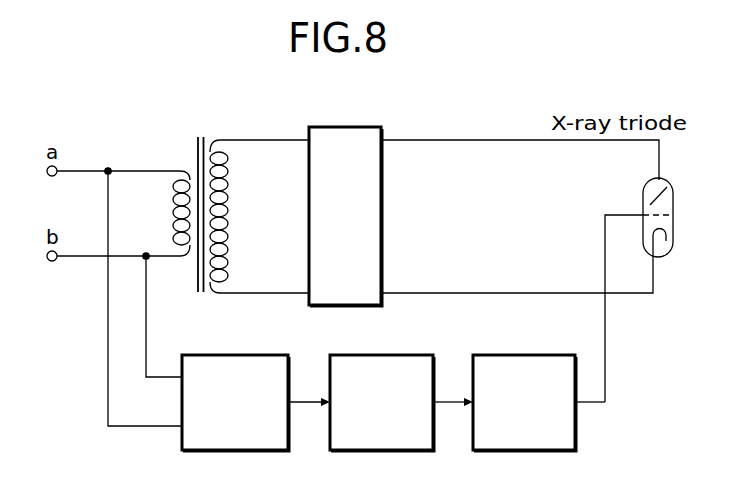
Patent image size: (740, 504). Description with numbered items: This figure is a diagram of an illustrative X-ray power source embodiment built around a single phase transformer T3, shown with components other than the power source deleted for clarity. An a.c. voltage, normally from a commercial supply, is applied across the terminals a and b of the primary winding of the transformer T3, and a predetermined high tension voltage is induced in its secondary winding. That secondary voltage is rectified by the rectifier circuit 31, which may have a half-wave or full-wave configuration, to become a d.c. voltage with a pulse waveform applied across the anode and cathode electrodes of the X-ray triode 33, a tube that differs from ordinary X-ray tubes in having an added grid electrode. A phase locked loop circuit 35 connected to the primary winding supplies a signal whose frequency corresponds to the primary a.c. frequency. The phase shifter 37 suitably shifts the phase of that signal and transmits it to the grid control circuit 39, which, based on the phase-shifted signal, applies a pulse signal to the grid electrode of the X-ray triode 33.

The single phase transformer T3 is at (200, 135).
The rectifier circuit 31 is at (382, 205).
The X-ray triode tube 33 is at (643, 192).
The phase locked loop circuit 35 is at (240, 355).
The phase shifter 37 is at (380, 355).
The grid control circuit 39 is at (522, 355).